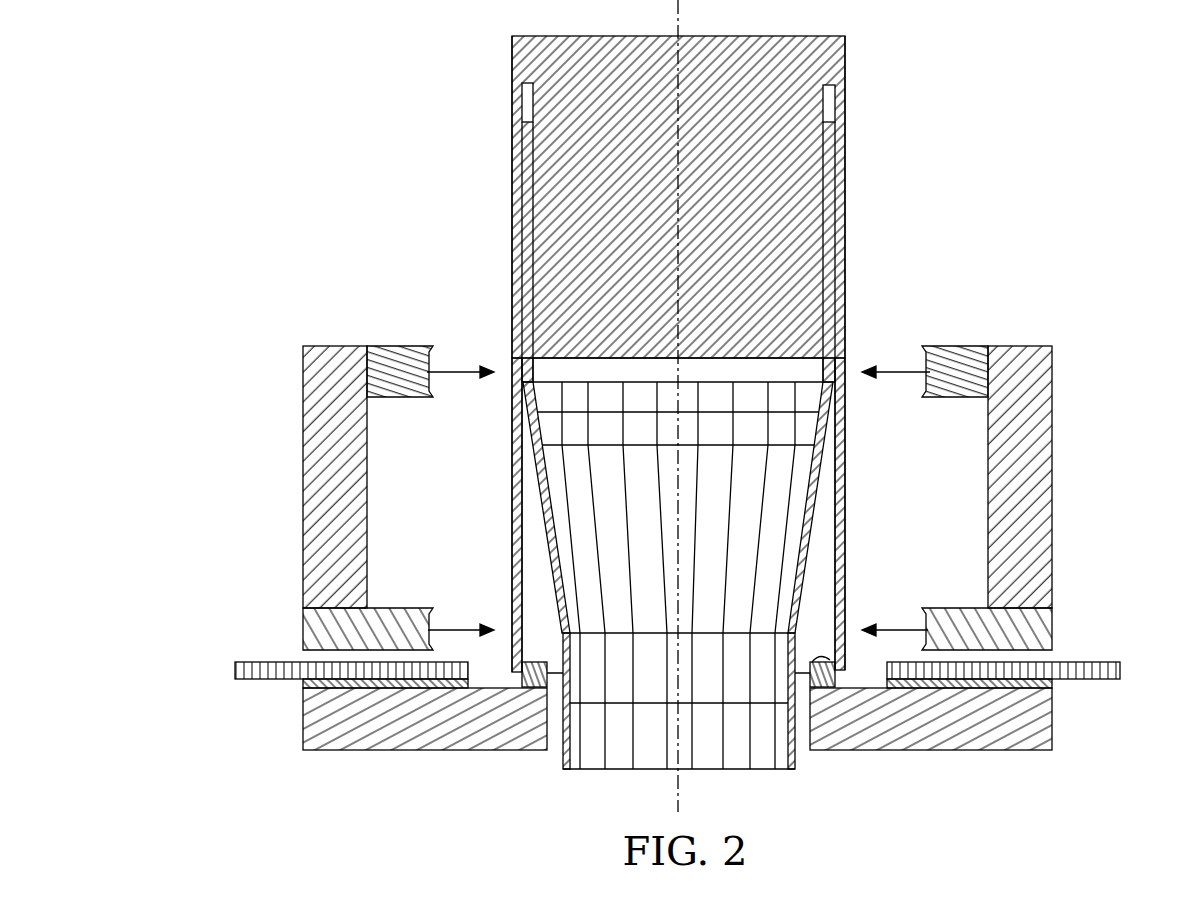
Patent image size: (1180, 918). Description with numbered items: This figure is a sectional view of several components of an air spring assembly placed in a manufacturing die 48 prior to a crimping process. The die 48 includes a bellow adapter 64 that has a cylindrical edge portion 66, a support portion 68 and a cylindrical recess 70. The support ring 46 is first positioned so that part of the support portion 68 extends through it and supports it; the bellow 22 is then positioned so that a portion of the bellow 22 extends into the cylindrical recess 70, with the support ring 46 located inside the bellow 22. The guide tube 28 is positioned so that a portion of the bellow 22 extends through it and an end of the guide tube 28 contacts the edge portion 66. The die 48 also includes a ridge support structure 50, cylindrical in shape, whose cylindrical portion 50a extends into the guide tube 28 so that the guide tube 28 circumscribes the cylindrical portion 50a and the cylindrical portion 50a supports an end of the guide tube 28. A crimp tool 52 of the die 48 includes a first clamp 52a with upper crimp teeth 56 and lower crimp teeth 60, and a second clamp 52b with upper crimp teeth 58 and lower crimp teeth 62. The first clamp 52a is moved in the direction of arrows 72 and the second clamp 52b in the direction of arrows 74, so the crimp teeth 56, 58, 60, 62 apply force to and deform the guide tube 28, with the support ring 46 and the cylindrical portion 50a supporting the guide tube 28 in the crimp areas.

The bellow 22 is at (738, 752).
The guide tube 28 is at (512, 500).
The support ring 46 is at (605, 368).
The die 48 is at (423, 778).
The ridge support structure 50 is at (925, 730).
The cylindrical portion 50a is at (828, 660).
The crimp tool 52 is at (240, 534).
The first clamp 52a is at (262, 412).
The second clamp 52b is at (1090, 500).
The upper crimp tooth 56 is at (400, 380).
The upper crimp tooth 58 is at (968, 380).
The lower crimp tooth 60 is at (325, 638).
The lower crimp tooth 62 is at (1035, 628).
The bellow adapter 64 is at (822, 63).
The cylindrical edge portion 66 is at (520, 345).
The support portion 68 is at (740, 343).
The cylindrical recess 70 is at (522, 92).
The arrows 72 is at (460, 380).
The arrows 74 is at (900, 380).